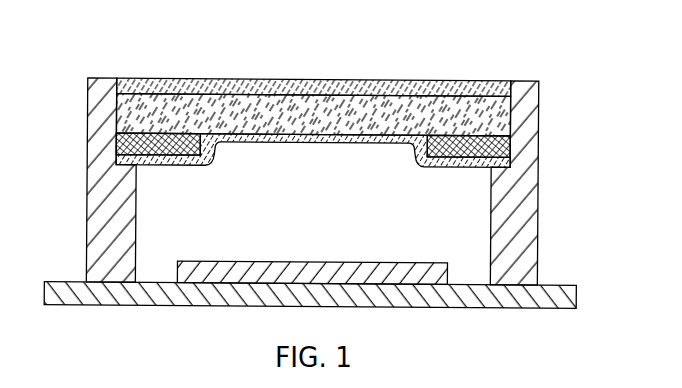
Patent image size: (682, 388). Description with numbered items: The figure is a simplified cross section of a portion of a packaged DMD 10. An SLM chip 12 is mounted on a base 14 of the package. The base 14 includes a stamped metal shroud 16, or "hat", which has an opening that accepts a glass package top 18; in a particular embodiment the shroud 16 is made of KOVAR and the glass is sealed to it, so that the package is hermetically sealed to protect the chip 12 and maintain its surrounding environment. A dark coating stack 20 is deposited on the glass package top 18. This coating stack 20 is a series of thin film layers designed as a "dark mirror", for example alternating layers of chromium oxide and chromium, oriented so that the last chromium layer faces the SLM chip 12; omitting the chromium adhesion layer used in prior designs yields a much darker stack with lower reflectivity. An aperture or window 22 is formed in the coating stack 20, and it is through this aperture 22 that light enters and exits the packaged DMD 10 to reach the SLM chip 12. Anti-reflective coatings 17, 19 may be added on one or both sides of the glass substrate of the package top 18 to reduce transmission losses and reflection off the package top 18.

The packaged DMD 10 is at (577, 85).
The SLM chip 12 is at (360, 262).
The base 14 is at (553, 284).
The stamped metal shroud 16 is at (538, 188).
The anti-reflective coating 17 is at (455, 166).
The glass package top 18 is at (510, 114).
The anti-reflective coating 19 is at (482, 80).
The dark coating stack 20 is at (510, 144).
The aperture 22 is at (330, 188).